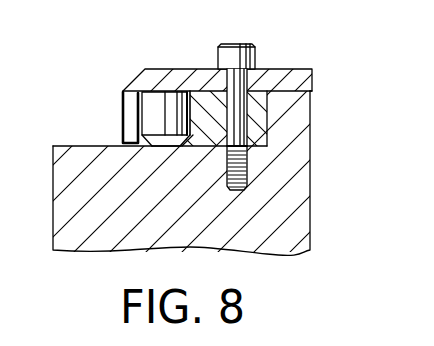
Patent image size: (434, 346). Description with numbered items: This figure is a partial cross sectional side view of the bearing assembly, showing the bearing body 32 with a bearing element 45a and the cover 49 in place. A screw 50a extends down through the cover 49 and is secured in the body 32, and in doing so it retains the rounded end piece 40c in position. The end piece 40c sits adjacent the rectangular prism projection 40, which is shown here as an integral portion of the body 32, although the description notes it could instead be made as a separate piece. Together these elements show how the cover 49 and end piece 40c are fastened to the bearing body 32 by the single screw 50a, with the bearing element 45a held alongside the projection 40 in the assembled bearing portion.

The bearing body 32 is at (289, 190).
The rectangular prism projection 40 is at (295, 110).
The rounded end piece 40c is at (207, 103).
The bearing element 45a is at (153, 108).
The cover 49 is at (125, 124).
The screw 50a is at (230, 56).